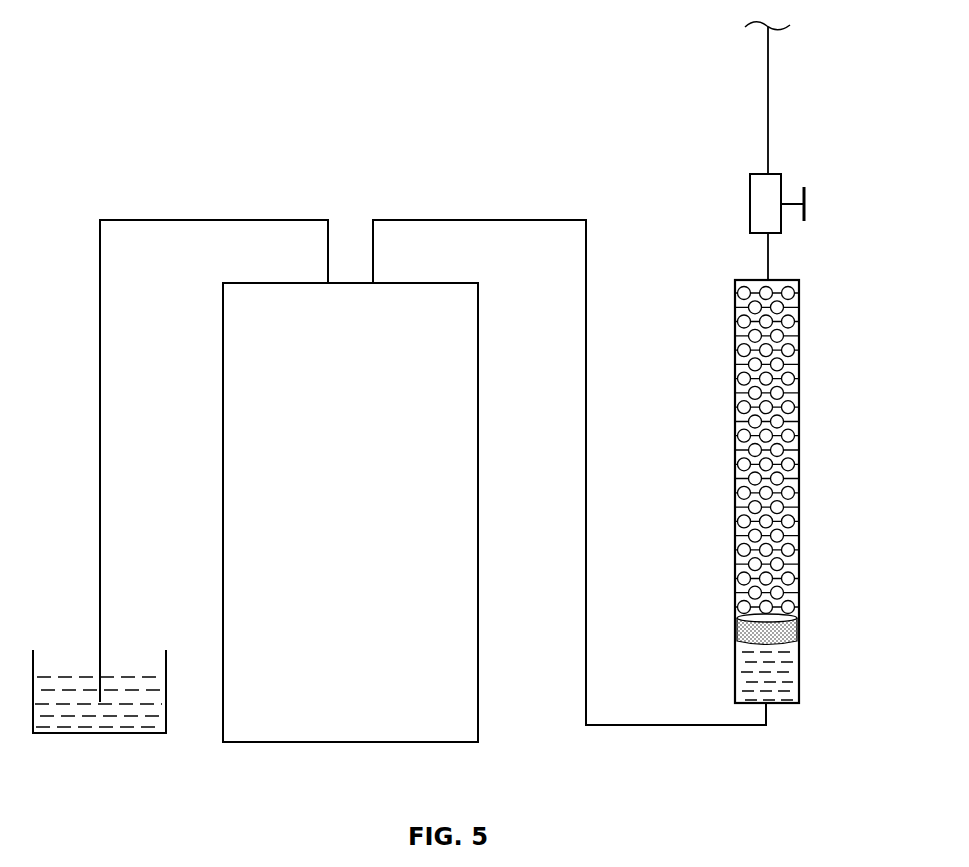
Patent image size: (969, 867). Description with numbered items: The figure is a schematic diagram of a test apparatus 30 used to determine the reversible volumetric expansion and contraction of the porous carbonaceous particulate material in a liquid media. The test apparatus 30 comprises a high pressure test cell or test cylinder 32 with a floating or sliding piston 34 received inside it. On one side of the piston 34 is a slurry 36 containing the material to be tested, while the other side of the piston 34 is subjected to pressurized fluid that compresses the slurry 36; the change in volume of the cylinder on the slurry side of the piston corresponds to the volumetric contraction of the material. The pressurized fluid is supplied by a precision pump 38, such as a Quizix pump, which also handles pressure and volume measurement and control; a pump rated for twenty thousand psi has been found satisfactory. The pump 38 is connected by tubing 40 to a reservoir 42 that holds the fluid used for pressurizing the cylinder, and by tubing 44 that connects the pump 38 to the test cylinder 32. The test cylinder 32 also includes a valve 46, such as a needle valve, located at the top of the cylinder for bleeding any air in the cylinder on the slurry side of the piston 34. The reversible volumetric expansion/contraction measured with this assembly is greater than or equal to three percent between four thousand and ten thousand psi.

The test apparatus 30 is at (148, 172).
The test cylinder 32 is at (799, 478).
The piston 34 is at (797, 632).
The slurry 36 is at (775, 351).
The precision pump 38 is at (341, 682).
The tubing 40 is at (99, 460).
The reservoir 42 is at (99, 734).
The tubing 44 is at (587, 472).
The valve 46 is at (781, 183).